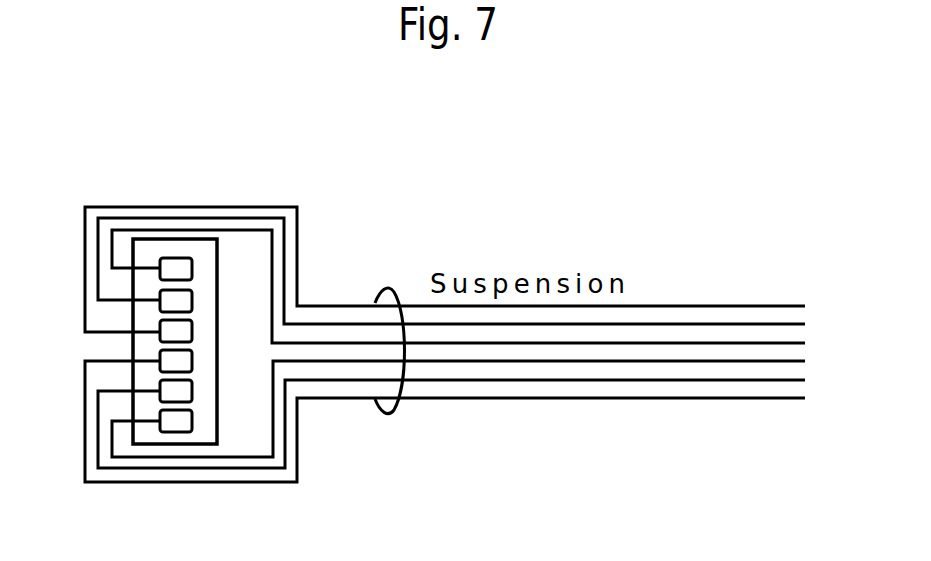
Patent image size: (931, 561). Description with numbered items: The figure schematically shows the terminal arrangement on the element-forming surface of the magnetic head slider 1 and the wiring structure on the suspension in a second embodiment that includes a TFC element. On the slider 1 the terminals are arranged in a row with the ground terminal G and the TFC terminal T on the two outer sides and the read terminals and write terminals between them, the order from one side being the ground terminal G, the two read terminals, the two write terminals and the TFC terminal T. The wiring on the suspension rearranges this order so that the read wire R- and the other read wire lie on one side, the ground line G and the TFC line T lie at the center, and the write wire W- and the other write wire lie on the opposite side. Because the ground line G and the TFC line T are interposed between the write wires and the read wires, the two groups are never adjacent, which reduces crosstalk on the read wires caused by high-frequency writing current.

The magnetic head slider 1 is at (132, 344).
The ground terminal / ground line G is at (471, 291).
The read terminal / read wire R− R- is at (462, 275).
The write terminal / write wire W− W- is at (472, 422).
The TFC terminal / TFC line T is at (470, 404).